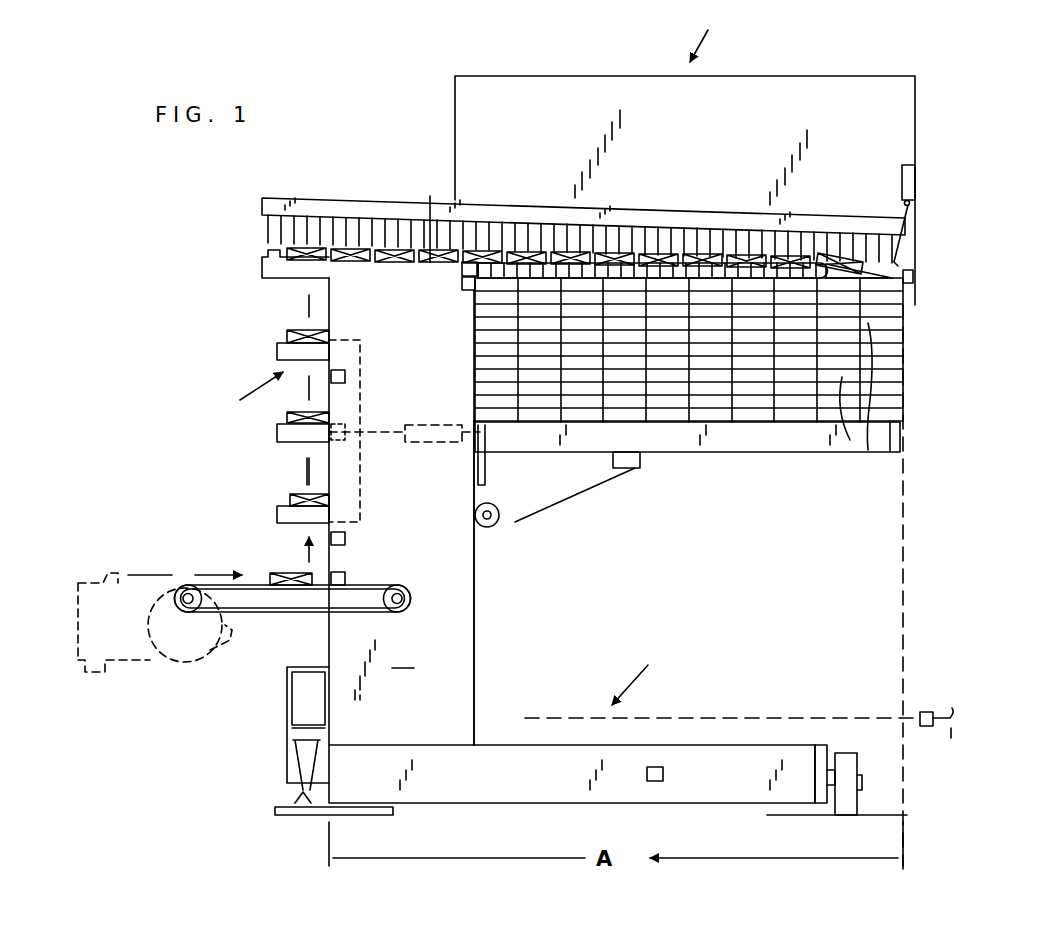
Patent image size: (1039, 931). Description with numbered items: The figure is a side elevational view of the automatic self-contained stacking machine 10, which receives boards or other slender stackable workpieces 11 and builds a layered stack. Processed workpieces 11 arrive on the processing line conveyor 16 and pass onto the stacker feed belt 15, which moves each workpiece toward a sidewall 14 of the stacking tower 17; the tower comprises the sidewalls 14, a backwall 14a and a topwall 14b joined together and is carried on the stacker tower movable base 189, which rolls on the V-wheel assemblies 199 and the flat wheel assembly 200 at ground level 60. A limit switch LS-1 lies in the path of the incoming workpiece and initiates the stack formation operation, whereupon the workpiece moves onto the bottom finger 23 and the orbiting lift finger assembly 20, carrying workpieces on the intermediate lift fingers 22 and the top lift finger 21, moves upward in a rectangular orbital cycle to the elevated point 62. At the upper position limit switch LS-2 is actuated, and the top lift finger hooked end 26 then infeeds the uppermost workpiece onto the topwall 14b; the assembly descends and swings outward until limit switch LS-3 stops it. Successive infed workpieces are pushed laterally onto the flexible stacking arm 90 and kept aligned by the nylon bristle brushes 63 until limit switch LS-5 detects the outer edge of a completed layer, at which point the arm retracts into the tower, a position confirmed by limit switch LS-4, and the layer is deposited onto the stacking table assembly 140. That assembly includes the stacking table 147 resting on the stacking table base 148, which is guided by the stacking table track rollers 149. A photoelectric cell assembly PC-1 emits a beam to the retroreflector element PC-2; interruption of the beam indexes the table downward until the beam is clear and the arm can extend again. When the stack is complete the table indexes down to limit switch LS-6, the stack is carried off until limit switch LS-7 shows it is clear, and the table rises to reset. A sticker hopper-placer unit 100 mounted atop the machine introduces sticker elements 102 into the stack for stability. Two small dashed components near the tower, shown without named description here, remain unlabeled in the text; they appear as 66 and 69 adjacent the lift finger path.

The automatic self-contained stacking machine 10 is at (710, 34).
The sticker hopper-placer unit 100 is at (783, 92).
The nylon bristle brushes 63 is at (265, 225).
The top lift finger hooked end 26 is at (264, 251).
The elevated point 62 is at (331, 245).
The topwall 14b is at (430, 262).
The stacking arm 90 is at (744, 268).
The top lift finger 21 is at (262, 268).
The limit switch LS-4 is at (462, 270).
The photoelectric cell assembly PC-1 is at (462, 285).
The retroreflector element PC-2 is at (913, 277).
The limit switch LS-5 is at (915, 180).
The stacking table assembly 140 is at (710, 462).
The sticker elements 102 is at (864, 401).
The workpieces 11 is at (287, 335).
The intermediate lift fingers 22 is at (277, 350).
The bottom finger 23 is at (277, 514).
The orbiting lift finger assembly 20 is at (251, 393).
The sidewalls 14 is at (391, 511).
The backwall 14a is at (329, 452).
The guide 66 is at (360, 341).
The actuator 69 is at (437, 443).
The limit switch LS-2 is at (345, 376).
The limit switch LS-1 is at (345, 538).
The limit switch LS-3 is at (345, 578).
The stacking tower 17 is at (474, 568).
The stacker feed belt 15 is at (283, 615).
The processing line conveyor 16 is at (85, 672).
The stacking table 147 is at (790, 450).
The stacking table base 148 is at (572, 495).
The stacking table track rollers 149 is at (499, 515).
The ground level 60 is at (795, 815).
The limit switch LS-6 is at (663, 774).
The flat wheel assembly 200 is at (845, 753).
The limit switch LS-7 is at (927, 726).
The stacker tower movable base 189 is at (643, 674).
The V-wheel assemblies 199 is at (292, 765).